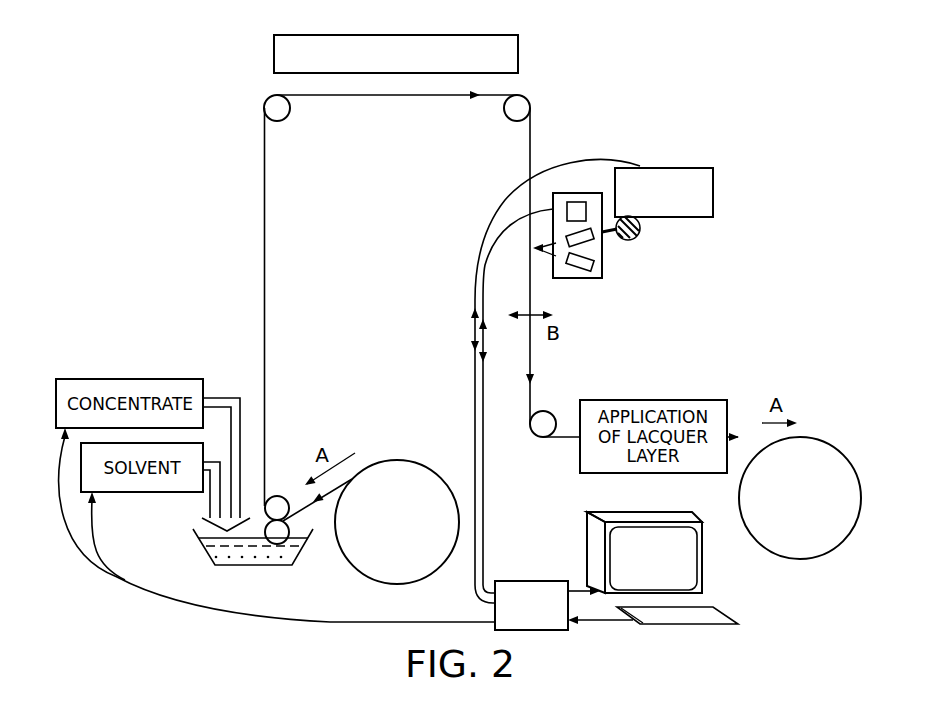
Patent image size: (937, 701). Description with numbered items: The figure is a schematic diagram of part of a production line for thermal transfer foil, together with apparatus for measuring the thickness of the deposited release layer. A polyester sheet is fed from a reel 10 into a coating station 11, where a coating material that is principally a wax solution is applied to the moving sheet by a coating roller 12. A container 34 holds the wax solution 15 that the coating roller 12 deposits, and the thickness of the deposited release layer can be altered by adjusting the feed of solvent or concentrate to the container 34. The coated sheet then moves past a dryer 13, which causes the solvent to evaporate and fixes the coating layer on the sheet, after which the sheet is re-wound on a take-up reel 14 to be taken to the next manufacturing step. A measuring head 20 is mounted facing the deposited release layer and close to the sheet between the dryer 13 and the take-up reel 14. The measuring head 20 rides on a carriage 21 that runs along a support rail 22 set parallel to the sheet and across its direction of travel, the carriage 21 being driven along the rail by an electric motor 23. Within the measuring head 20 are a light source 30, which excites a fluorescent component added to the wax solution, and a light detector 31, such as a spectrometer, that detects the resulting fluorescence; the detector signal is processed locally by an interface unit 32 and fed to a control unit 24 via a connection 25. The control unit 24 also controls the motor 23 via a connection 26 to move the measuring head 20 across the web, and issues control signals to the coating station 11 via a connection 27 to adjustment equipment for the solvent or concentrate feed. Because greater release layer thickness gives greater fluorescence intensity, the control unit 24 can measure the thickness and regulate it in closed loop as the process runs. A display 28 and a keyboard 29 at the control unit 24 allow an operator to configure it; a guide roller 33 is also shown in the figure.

The reel 10 is at (430, 570).
The coating station 11 is at (258, 576).
The coating roller 12 is at (293, 522).
The dryer 13 is at (520, 50).
The take-up reel 14 is at (812, 553).
The wax solution 15 is at (291, 556).
The measuring head 20 is at (601, 278).
The carriage 21 is at (607, 226).
The support rail 22 is at (640, 233).
The electric motor 23 is at (680, 168).
The control unit 24 is at (540, 580).
The connection 25 is at (484, 475).
The connection 26 is at (474, 465).
The connection 27 is at (238, 612).
The display 28 is at (703, 560).
The keyboard 29 is at (692, 625).
The light source 30 is at (578, 270).
The light detector 31 is at (588, 241).
The interface unit 32 is at (570, 202).
The guide roller 33 is at (530, 358).
The container 34 is at (193, 538).